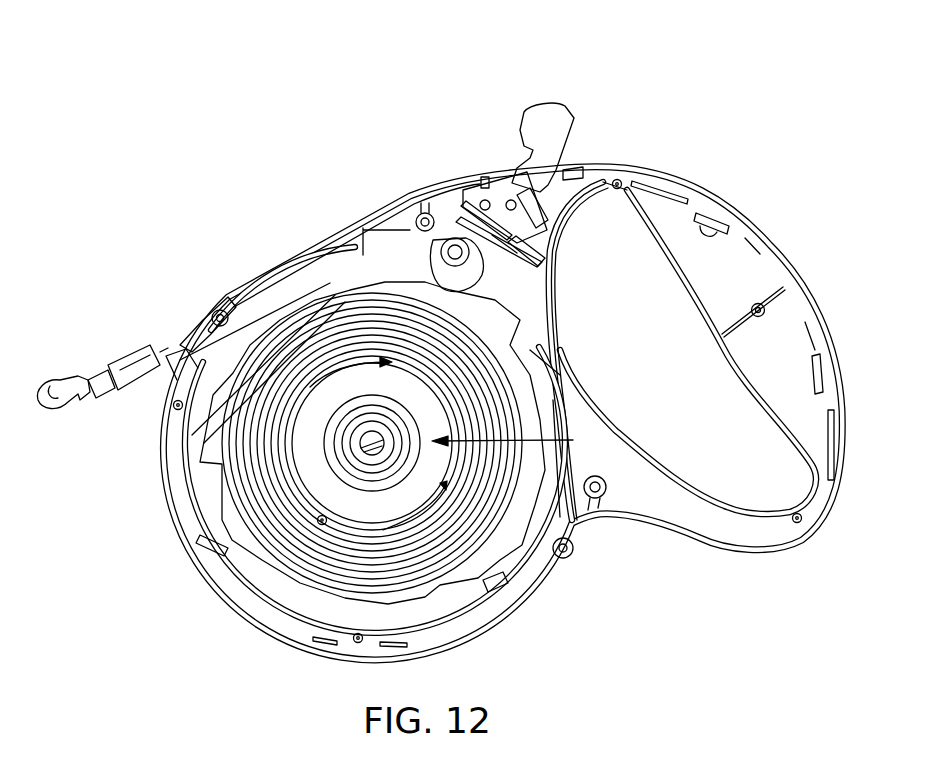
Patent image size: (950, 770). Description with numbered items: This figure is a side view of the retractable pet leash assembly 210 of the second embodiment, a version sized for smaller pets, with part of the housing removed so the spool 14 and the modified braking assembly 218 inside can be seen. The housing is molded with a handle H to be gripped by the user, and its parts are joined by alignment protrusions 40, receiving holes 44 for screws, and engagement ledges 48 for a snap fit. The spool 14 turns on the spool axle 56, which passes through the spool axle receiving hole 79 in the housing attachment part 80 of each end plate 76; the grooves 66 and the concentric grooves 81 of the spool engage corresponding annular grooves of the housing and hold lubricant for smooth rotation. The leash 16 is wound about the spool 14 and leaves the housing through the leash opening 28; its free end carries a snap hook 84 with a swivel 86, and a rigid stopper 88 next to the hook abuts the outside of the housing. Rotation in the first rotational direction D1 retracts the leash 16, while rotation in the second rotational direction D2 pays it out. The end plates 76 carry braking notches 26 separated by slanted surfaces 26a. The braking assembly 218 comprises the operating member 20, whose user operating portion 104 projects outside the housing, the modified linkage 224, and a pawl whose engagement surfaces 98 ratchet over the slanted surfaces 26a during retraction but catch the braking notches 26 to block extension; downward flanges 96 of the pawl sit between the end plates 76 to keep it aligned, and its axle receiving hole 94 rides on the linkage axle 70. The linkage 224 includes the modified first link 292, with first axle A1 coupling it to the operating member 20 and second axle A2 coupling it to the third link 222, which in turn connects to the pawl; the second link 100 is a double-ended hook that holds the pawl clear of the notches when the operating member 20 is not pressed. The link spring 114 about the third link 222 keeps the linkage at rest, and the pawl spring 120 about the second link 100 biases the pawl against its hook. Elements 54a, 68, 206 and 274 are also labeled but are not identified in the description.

The retractable pet leash assembly 210 is at (632, 55).
The spool 14 is at (458, 610).
The leash 16 is at (182, 330).
The operating member 20 is at (574, 150).
The braking notches 26 is at (556, 393).
The slanted surface 26a is at (556, 463).
The leash opening 28 is at (157, 402).
The alignment protrusions 40 is at (179, 410).
The receiving holes 44 is at (414, 221).
The engagement ledges 48 is at (205, 541).
The wall portion 54a is at (554, 380).
The spool axle 56 is at (362, 438).
The grooves 66 is at (384, 401).
The hub ring 68 is at (384, 430).
The linkage axle 70 is at (470, 263).
The end plates 76 is at (263, 573).
The spool axle receiving hole 79 is at (378, 450).
The housing attachment part 80 is at (516, 439).
The grooves 81 is at (377, 499).
The snap hook 84 is at (45, 380).
The swivel 86 is at (93, 380).
The stopper 88 is at (148, 352).
The axle receiving hole 94 is at (440, 249).
The flanges 96 is at (530, 350).
The engagement surfaces 98 is at (550, 317).
The second link 100 is at (543, 262).
The user operating portion 104 is at (552, 106).
The link spring 114 is at (440, 194).
The pawl spring 120 is at (520, 238).
The lever 206 is at (514, 172).
The modified braking assembly 218 is at (410, 167).
The third link 222 is at (447, 203).
The modified linkage 224 is at (453, 192).
The stop 274 is at (582, 168).
The modified first link 292 is at (486, 176).
The first axle A1 is at (525, 232).
The second axle A2 is at (482, 197).
The first rotational direction D1 is at (345, 378).
The second rotational direction D2 is at (398, 505).
The handle H is at (747, 230).